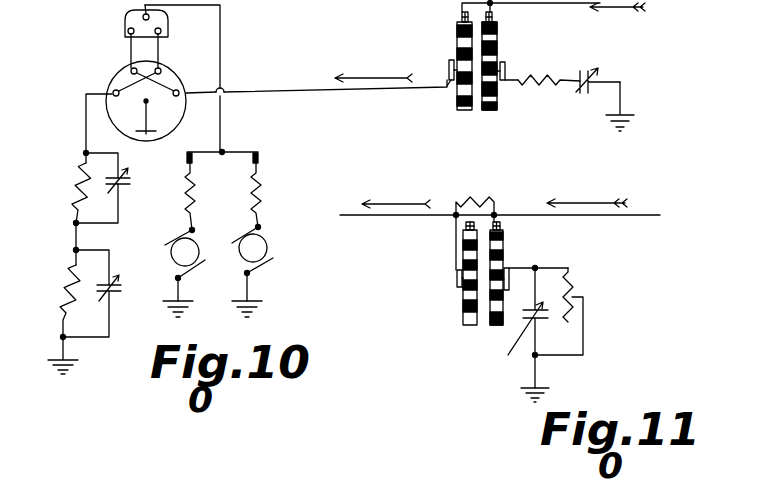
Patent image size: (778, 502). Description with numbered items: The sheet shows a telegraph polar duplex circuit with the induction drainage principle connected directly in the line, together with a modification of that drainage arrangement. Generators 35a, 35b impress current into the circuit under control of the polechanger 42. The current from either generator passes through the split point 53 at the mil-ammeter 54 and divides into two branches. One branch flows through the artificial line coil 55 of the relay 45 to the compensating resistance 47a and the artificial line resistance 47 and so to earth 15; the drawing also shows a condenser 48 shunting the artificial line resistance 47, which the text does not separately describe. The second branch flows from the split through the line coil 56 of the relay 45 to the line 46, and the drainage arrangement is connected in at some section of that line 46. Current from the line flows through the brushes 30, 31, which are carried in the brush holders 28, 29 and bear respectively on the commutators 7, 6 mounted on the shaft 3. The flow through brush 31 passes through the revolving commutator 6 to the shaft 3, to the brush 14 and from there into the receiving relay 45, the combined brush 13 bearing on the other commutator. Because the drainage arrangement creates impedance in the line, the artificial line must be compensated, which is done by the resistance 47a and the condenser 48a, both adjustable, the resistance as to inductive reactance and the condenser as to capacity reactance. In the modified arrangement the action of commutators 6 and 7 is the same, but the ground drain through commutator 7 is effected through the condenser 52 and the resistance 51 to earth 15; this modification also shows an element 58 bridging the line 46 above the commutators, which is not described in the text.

In FIG. 10, the shaft 3 is at (449, 70).
In FIG. 11, the shaft 3 is at (456, 279).
In FIG. 10, the commutator 6 is at (457, 29).
In FIG. 11, the commutator 6 is at (470, 326).
In FIG. 10, the commutator 7 is at (498, 50).
In FIG. 11, the commutator 7 is at (496, 326).
In FIG. 10, the combined brush 13 is at (506, 73).
In FIG. 11, the combined brush 13 is at (509, 267).
In FIG. 10, the brush 14 is at (449, 66).
In FIG. 11, the brush 14 is at (457, 285).
In FIG. 10, the earth 15 is at (172, 311).
In FIG. 11, the earth 15 is at (546, 393).
In FIG. 10, the brush holder 28 is at (493, 20).
In FIG. 11, the brush holder 28 is at (501, 228).
In FIG. 10, the brush holder 29 is at (460, 14).
In FIG. 11, the brush holder 29 is at (465, 229).
In FIG. 10, the brush 30 is at (493, 12).
In FIG. 11, the brush 30 is at (498, 222).
In FIG. 10, the brush 31 is at (462, 4).
In FIG. 11, the brush 31 is at (463, 222).
In FIG. 10, the generator 35a is at (171, 255).
In FIG. 10, the generator 35b is at (268, 246).
In FIG. 10, the polechanger 42 is at (223, 151).
In FIG. 10, the relay 45 is at (168, 67).
In FIG. 10, the line 46 is at (490, 42).
In FIG. 11, the line 46 is at (512, 203).
In FIG. 10, the artificial line resistance 47 is at (68, 292).
In FIG. 10, the compensating resistance 47a is at (83, 172).
In FIG. 10, the variable condenser 48 is at (113, 296).
In FIG. 10, the condenser 48a is at (124, 173).
In FIG. 10, the resistance 51 is at (541, 86).
In FIG. 11, the resistance 51 is at (577, 294).
In FIG. 10, the condenser 52 is at (598, 70).
In FIG. 11, the condenser 52 is at (515, 327).
In FIG. 10, the split point 53 is at (140, 18).
In FIG. 10, the mil-ammeter 54 is at (163, 20).
In FIG. 10, the artificial line coil 55 is at (118, 95).
In FIG. 10, the line coil 56 is at (174, 95).
In FIG. 11, the resistor 58 is at (472, 200).